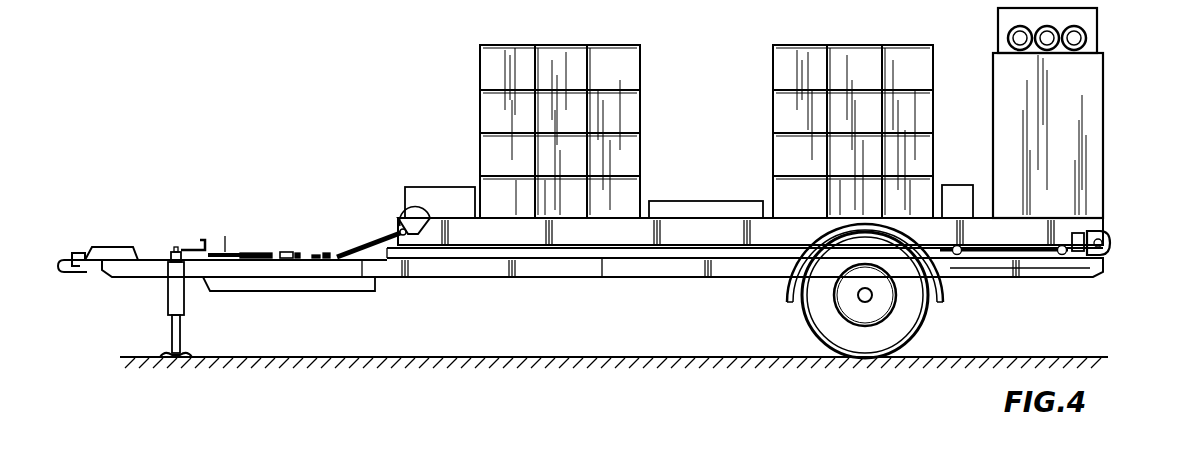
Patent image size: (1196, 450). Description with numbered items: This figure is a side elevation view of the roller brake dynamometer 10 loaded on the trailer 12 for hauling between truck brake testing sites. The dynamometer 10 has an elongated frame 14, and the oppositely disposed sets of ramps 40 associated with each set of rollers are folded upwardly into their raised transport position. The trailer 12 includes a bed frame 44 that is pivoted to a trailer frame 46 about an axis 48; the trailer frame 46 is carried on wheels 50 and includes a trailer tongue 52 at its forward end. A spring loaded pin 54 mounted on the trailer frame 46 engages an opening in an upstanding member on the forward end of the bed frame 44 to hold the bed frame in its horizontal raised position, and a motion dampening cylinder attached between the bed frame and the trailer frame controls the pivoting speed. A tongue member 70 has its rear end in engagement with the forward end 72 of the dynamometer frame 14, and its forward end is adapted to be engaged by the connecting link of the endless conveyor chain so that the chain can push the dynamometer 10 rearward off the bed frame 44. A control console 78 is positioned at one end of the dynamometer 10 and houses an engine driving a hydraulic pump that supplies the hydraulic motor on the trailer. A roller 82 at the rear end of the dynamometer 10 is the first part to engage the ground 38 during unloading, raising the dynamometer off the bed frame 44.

The roller brake dynamometer 10 is at (468, 93).
The trailer 12 is at (222, 246).
The elongated frame 14 is at (456, 212).
The ground 38 is at (146, 356).
The ramps 40 is at (780, 75).
The bed frame 44 is at (1040, 256).
The trailer frame 46 is at (1020, 262).
The axis 48 is at (848, 318).
The wheels 50 is at (813, 305).
The trailer tongue 52 is at (122, 272).
The spring loaded pin 54 is at (250, 246).
The tongue member 70 is at (363, 252).
The forward end of the dynamometer frame 72 is at (410, 214).
The control console 78 is at (1093, 190).
The roller 82 is at (1102, 224).